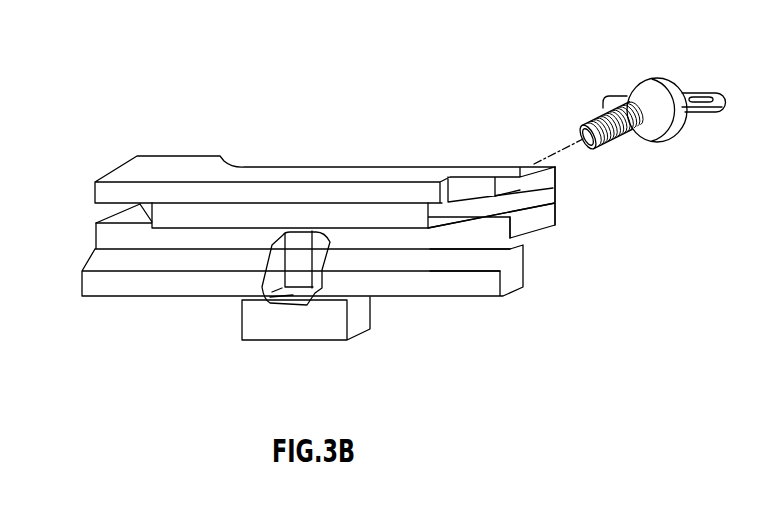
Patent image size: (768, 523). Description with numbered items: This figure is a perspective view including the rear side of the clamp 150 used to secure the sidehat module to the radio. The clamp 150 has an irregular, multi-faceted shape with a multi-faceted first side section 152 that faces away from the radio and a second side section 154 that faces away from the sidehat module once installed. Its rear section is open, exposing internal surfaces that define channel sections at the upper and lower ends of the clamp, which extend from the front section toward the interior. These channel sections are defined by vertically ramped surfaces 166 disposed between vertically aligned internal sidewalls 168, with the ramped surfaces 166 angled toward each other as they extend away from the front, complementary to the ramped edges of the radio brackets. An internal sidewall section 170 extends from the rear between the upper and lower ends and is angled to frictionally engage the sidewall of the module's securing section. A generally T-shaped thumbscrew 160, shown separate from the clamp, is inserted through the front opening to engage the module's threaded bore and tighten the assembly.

The clamp 150 is at (497, 313).
The first side section 152 is at (412, 298).
The second side section 154 is at (180, 168).
The thumbscrew 160 is at (677, 53).
The ramped surfaces 166 is at (140, 204).
The internal sidewalls 168 is at (504, 198).
The internal sidewall section 170 is at (0, 30).